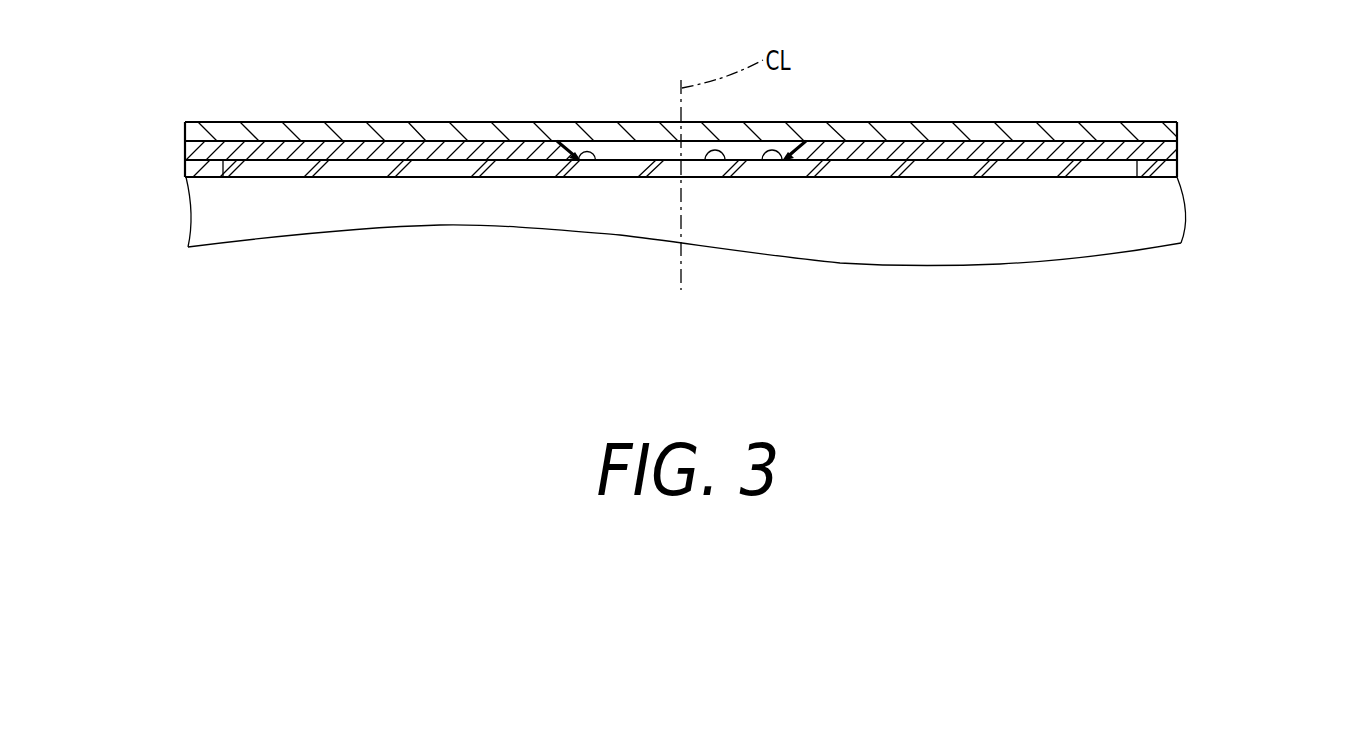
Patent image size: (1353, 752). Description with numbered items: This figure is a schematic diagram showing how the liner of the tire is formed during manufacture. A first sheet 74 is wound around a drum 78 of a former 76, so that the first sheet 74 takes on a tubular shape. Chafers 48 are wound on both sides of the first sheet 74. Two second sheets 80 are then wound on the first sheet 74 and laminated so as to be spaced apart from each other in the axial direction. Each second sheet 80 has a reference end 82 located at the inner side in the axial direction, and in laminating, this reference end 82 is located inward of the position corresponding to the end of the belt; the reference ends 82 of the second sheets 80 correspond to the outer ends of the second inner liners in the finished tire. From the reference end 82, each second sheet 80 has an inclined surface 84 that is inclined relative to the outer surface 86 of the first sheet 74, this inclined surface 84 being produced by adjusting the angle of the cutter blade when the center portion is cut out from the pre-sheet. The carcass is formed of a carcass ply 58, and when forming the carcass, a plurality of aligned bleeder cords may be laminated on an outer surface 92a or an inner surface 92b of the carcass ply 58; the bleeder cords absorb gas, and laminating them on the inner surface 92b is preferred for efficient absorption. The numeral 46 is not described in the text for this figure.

The laminate body 46 is at (267, 130).
The chafer 48 is at (200, 172).
The carcass ply 58 is at (430, 130).
The first sheet 74 is at (1040, 166).
The former 76 is at (1200, 211).
The drum 78 is at (1163, 195).
The second sheet 80 is at (352, 148).
The reference end 82 is at (588, 162).
The inclined surface 84 is at (571, 140).
The outer surface 86 is at (715, 162).
The outer surface 92a is at (600, 122).
The inner surface 92b is at (645, 141).